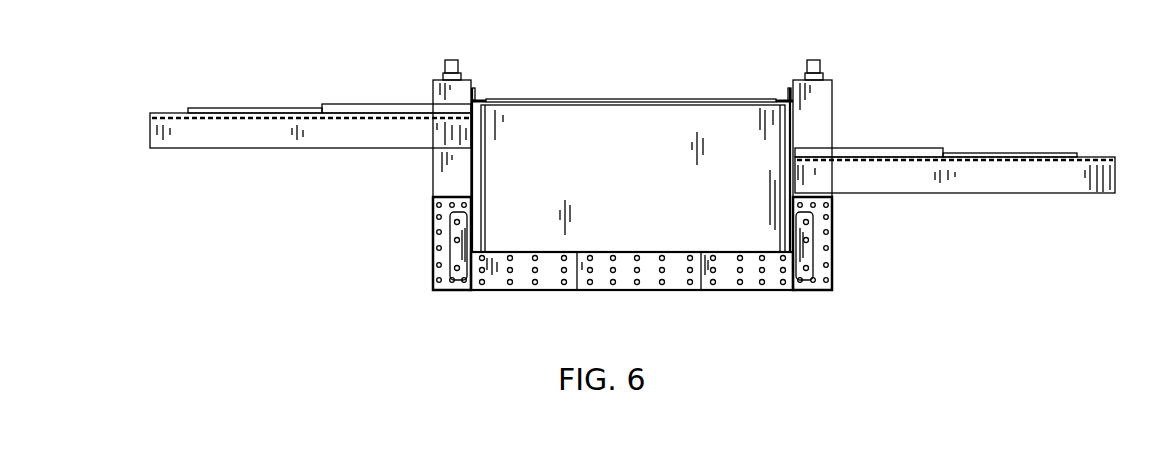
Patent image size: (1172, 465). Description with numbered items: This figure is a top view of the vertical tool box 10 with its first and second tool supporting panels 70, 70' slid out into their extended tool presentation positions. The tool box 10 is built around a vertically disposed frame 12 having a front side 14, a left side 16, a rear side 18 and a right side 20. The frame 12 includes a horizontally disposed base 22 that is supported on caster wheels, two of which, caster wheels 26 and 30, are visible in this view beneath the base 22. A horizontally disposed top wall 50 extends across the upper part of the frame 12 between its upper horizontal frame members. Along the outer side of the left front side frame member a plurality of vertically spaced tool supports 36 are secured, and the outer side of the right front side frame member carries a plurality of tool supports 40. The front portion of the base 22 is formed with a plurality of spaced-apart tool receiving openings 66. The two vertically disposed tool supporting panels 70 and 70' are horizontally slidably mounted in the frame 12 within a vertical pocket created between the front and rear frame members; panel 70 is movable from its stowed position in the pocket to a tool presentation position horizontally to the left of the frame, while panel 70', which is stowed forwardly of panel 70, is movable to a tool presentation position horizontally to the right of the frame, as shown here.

The vertical tool box 10 is at (948, 107).
The frame 12 is at (431, 168).
The front side 14 is at (710, 300).
The left side 16 is at (415, 213).
The rear side 18 is at (637, 80).
The right side 20 is at (845, 112).
The base 22 is at (815, 108).
The caster wheel 26 is at (452, 65).
The caster wheel 30 is at (818, 65).
The tool supports 36 is at (455, 255).
The tool supports 40 is at (900, 231).
The top wall 50 is at (635, 197).
The tool receiving openings 66 is at (563, 273).
The tool supporting panel 70 is at (310, 161).
The tool supporting panel 70' is at (955, 138).